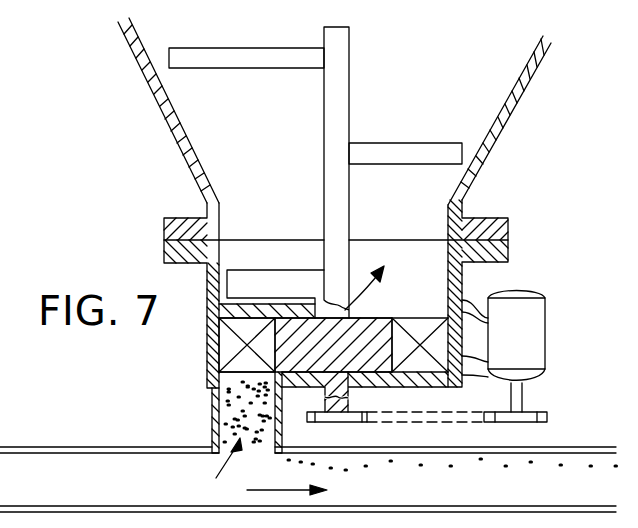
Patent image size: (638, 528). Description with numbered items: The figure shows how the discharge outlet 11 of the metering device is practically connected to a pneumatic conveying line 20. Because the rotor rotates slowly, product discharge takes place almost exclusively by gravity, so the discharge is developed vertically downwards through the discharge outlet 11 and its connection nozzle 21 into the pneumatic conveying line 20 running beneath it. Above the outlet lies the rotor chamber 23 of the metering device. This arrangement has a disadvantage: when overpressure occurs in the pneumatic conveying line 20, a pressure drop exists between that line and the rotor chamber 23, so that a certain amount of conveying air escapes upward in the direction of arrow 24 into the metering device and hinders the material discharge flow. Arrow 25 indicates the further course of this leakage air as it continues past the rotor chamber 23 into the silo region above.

The discharge outlet 11 is at (225, 430).
The pneumatic conveying line 20 is at (563, 446).
The connection nozzle 21 is at (282, 425).
The rotor chamber 23 is at (225, 345).
The arrow 24 is at (216, 478).
The arrow 25 is at (366, 296).